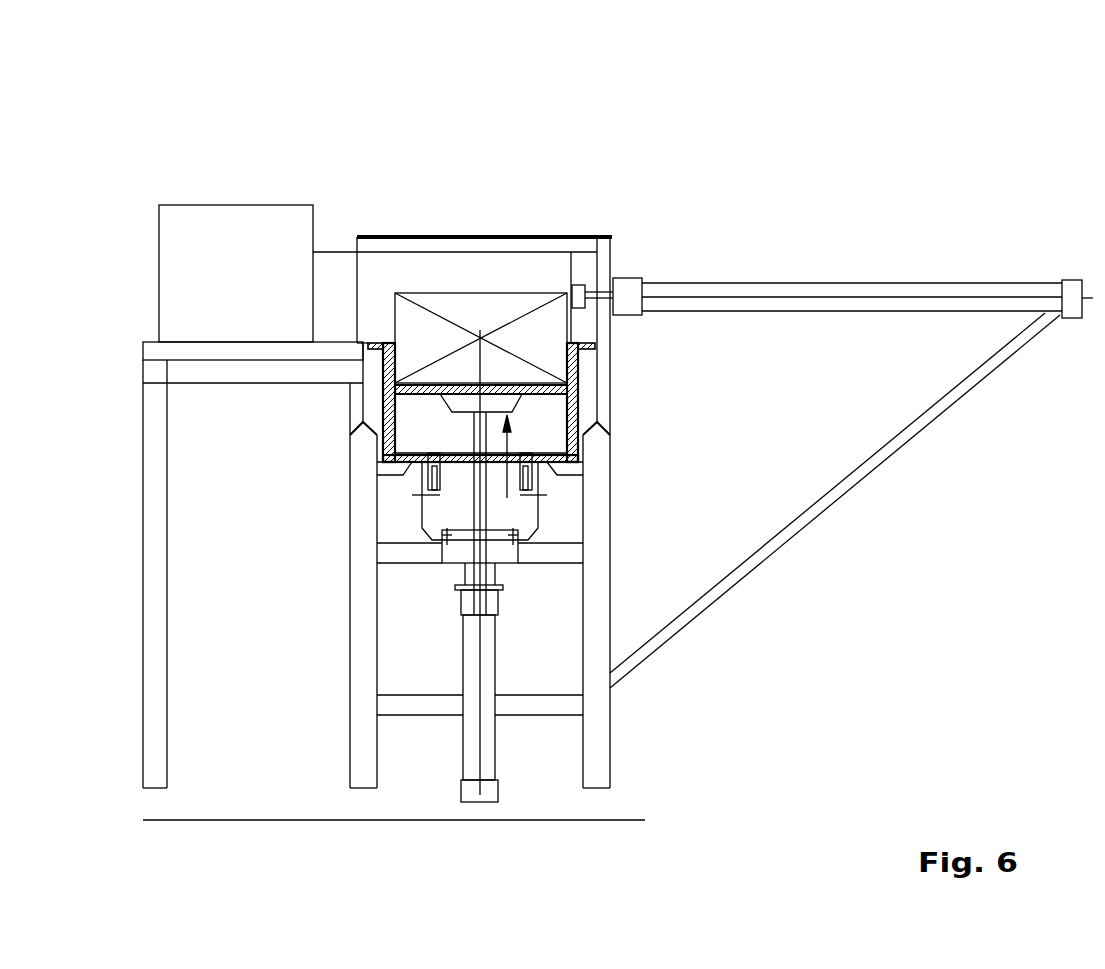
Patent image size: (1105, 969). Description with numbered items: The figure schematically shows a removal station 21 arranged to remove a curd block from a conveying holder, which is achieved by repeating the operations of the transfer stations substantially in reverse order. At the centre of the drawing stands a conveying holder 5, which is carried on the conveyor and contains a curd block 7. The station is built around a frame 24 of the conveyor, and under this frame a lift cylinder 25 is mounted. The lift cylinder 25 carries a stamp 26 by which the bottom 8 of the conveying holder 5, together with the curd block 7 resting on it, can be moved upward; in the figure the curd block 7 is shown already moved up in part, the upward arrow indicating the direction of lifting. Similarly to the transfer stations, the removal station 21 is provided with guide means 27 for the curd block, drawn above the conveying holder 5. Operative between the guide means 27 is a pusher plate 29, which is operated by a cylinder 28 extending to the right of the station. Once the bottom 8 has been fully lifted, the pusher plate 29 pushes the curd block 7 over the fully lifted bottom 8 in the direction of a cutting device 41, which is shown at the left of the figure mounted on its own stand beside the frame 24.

The removal station 21 is at (621, 195).
The cutting device 41 is at (243, 245).
The guide means 27 is at (465, 268).
The pusher plate 29 is at (573, 270).
The cylinder 28 is at (760, 282).
The curd block 7 is at (557, 340).
The conveying holder 5 is at (578, 412).
The stamp 26 is at (467, 400).
The bottom 8 is at (412, 394).
The frame 24 is at (597, 560).
The lift cylinder 25 is at (485, 638).